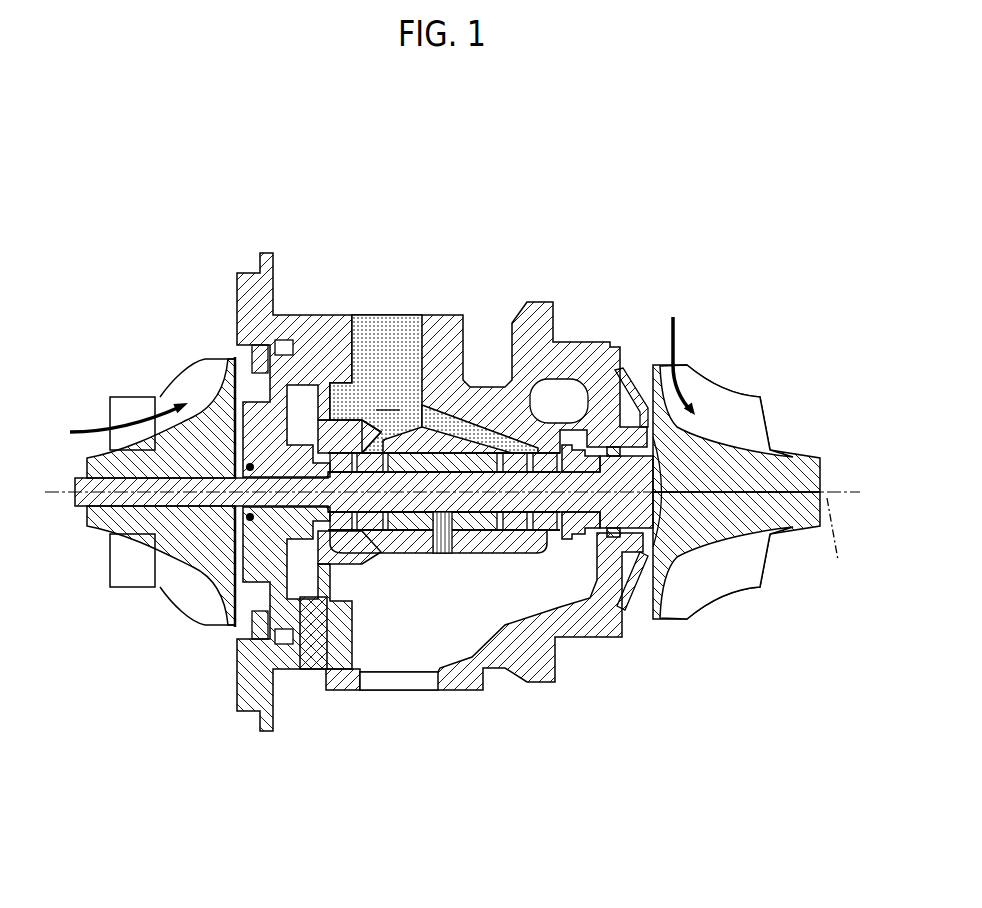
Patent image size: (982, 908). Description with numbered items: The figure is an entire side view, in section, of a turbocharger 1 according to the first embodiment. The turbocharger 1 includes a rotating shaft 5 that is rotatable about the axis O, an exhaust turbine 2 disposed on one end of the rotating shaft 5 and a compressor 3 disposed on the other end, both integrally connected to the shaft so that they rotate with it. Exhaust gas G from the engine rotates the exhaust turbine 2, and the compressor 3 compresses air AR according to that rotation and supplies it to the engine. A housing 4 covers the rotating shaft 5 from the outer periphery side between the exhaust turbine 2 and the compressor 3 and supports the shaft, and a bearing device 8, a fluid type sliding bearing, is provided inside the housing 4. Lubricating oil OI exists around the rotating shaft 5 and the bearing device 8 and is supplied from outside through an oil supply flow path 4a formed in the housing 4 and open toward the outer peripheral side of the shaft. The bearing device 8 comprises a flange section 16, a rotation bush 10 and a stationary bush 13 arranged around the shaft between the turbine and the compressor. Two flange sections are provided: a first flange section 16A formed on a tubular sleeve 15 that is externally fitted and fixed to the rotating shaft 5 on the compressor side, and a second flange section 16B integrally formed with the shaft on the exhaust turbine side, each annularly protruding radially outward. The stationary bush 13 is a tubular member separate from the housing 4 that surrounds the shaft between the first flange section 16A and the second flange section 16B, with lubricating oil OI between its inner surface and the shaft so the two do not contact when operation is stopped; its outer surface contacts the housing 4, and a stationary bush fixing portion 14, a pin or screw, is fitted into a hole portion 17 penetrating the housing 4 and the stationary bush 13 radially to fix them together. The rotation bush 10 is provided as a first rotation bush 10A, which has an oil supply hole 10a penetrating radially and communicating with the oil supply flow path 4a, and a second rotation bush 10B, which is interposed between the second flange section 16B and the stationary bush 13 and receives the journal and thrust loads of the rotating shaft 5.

The turbocharger 1 is at (452, 486).
The exhaust turbine 2 is at (722, 408).
The compressor 3 is at (185, 396).
The housing 4 is at (443, 326).
The oil supply flow path 4a is at (395, 343).
The rotating shaft 5 is at (570, 600).
The bearing device 8 is at (400, 567).
The rotation bush 10 is at (437, 614).
The first rotation bush 10A is at (378, 522).
The second rotation bush 10B is at (520, 525).
The oil supply hole 10a is at (553, 453).
The stationary bush 13 is at (448, 452).
The stationary bush fixing portion 14 is at (443, 540).
The tubular sleeve 15 is at (254, 518).
The flange section 16 is at (463, 396).
The first flange section 16A is at (312, 447).
The second flange section 16B is at (572, 447).
The hole portion 17 is at (443, 523).
The air AR is at (93, 432).
The exhaust gas G is at (675, 326).
The axis O is at (836, 547).
The lubricating oil OI is at (388, 397).